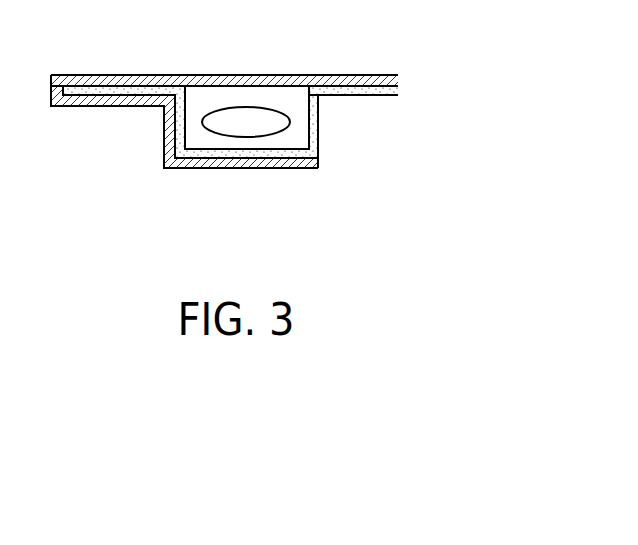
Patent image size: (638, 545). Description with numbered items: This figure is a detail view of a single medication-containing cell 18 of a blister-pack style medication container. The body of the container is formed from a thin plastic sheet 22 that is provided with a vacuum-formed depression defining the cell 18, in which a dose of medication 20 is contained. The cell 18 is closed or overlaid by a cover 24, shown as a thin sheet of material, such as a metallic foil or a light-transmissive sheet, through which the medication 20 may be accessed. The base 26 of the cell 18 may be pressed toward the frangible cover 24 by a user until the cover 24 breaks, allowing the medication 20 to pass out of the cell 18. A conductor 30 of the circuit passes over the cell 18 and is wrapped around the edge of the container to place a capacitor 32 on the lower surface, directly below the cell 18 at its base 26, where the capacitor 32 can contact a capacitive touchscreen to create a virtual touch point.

The cell 18 is at (318, 127).
The medication 20 is at (247, 115).
The plastic sheet 22 is at (378, 90).
The cover 24 is at (140, 75).
The base 26 is at (207, 153).
The conductor 30 is at (165, 155).
The capacitor 32 is at (285, 163).